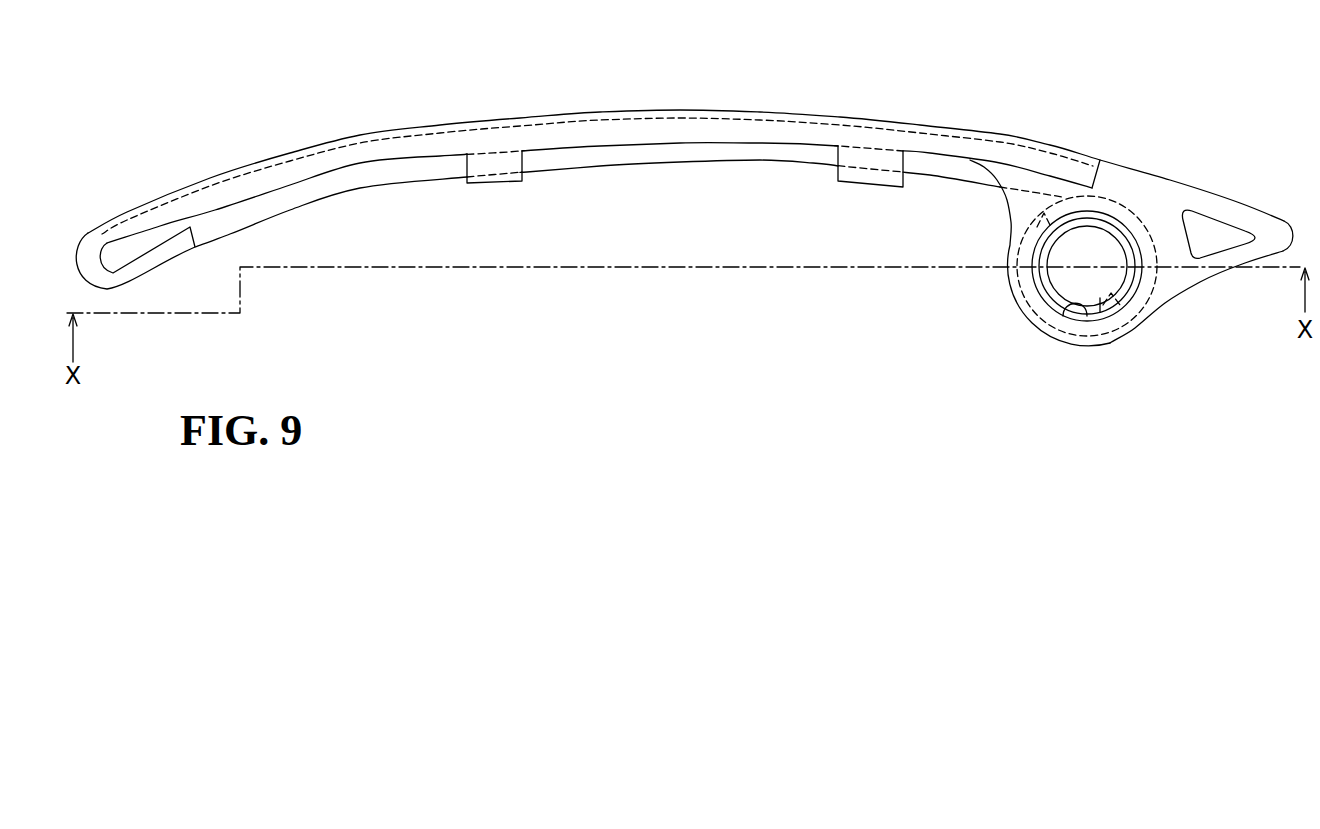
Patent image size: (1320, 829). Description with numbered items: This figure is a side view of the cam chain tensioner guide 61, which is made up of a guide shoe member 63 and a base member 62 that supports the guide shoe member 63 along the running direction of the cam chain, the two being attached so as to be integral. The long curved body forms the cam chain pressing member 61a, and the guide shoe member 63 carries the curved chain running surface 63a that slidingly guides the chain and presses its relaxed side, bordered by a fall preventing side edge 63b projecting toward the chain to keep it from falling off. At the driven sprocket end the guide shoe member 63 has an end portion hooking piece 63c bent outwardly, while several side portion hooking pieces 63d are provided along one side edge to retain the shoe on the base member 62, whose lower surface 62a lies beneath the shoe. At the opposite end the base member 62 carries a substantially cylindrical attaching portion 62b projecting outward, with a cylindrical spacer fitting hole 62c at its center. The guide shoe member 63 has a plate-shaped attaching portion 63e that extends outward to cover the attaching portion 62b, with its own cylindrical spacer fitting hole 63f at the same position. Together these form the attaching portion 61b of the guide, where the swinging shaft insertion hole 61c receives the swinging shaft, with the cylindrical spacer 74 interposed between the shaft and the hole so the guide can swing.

The cam chain tensioner guide 61 is at (670, 38).
The base member 62 is at (662, 150).
The guide shoe member 63 is at (597, 115).
The cam chain pressing member 61a is at (775, 110).
The attaching portion 61b is at (1223, 195).
The swinging shaft insertion hole 61c is at (1103, 250).
The lower surface of guide body 62a is at (717, 165).
The attaching portion 62b is at (1032, 313).
The cylindrical spacer fitting hole 62c is at (1125, 315).
The chain running surface 63a is at (875, 125).
The fall preventing side edge 63b is at (390, 130).
The end portion hooking piece 63c is at (158, 256).
The side portion hooking pieces 63d is at (488, 188).
The attaching portion 63e is at (1175, 280).
The cylindrical spacer fitting hole 63f is at (1066, 316).
The cylindrical spacer 74 is at (1074, 220).